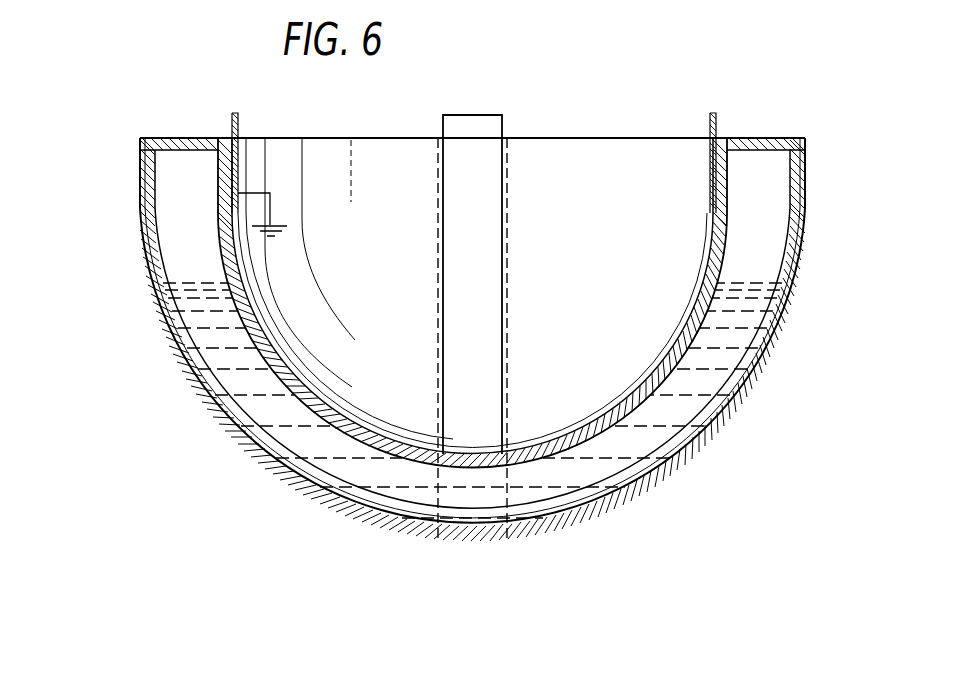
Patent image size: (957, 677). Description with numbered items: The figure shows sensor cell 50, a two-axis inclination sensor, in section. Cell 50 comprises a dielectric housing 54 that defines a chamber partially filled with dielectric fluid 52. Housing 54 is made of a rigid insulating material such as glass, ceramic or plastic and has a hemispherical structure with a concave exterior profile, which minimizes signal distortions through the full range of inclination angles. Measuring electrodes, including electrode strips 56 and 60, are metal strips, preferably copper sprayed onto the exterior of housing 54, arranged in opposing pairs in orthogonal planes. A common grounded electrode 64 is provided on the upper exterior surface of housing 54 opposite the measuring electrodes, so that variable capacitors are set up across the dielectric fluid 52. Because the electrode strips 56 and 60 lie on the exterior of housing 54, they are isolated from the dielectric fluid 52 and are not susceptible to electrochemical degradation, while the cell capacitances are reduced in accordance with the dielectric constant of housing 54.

The sensor cell 50 is at (106, 120).
The dielectric fluid 52 is at (313, 471).
The dielectric housing 54 is at (762, 139).
The electrode strip 56 is at (806, 182).
The electrode strip 60 is at (204, 400).
The common grounded electrode 64 is at (238, 152).